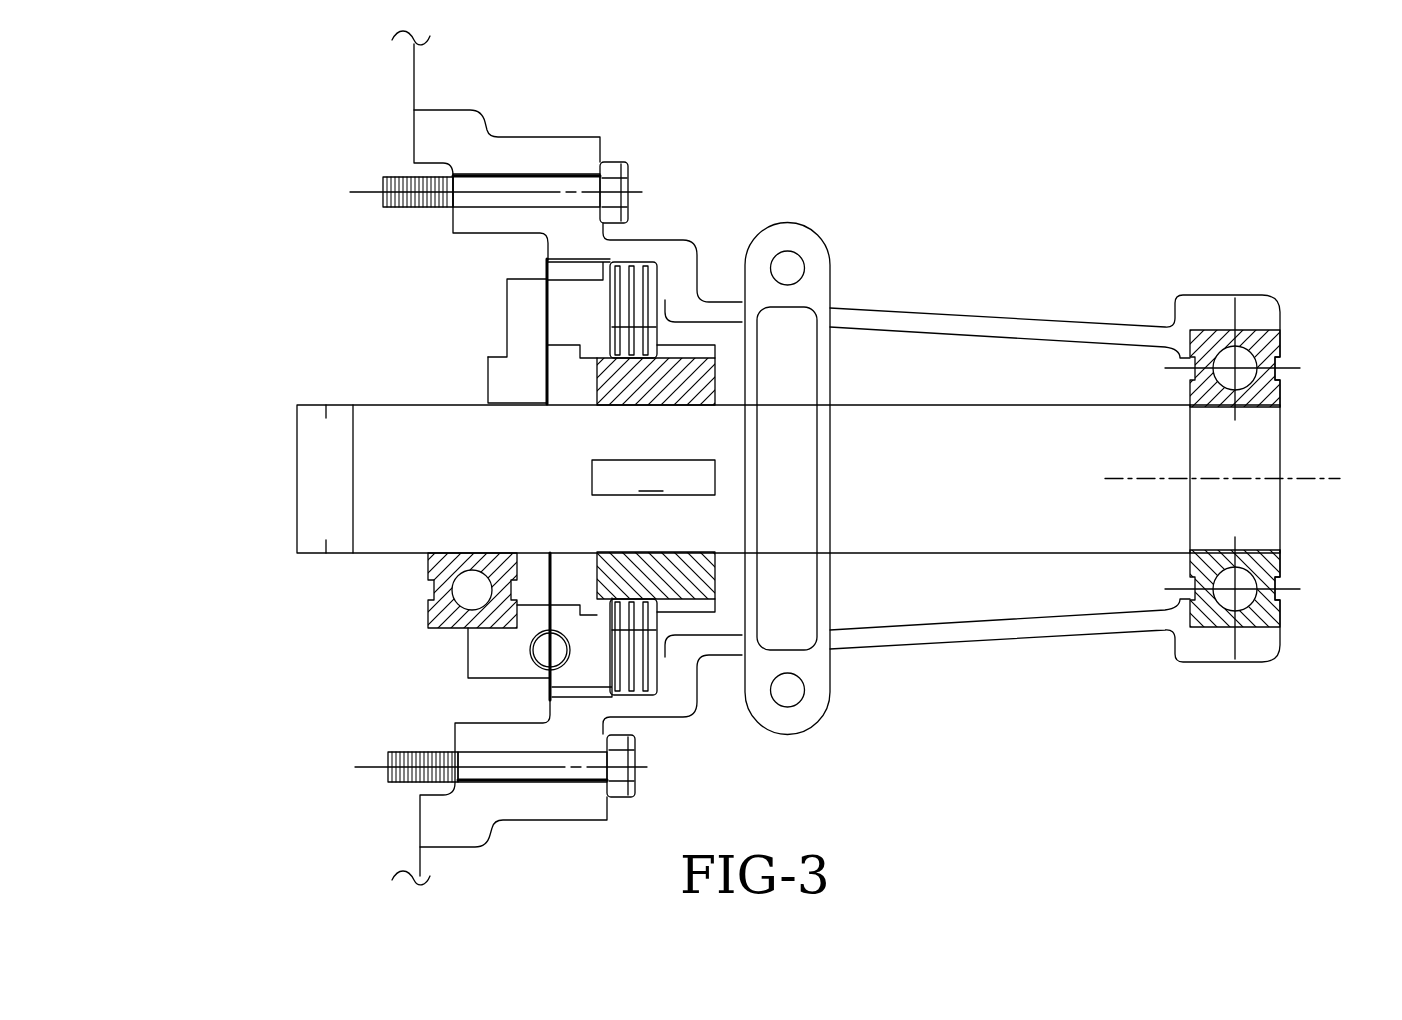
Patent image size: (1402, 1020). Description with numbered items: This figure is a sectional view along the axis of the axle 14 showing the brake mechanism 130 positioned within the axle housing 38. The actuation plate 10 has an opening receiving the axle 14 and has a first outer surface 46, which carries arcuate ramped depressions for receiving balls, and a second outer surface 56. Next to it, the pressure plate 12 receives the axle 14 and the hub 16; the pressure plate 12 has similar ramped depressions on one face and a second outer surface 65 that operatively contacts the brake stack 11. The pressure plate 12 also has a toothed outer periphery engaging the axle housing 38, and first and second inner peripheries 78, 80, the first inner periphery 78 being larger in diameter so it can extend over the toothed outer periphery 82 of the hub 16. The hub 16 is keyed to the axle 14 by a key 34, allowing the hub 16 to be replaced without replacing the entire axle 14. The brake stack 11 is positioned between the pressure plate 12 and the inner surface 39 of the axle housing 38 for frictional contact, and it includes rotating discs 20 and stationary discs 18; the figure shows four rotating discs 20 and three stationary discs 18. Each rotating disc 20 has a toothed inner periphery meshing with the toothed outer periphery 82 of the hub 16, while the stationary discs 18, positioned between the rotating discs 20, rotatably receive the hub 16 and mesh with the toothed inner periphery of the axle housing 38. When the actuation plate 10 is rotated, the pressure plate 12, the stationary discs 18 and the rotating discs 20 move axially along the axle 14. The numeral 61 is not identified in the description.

The brake mechanism 130 is at (213, 223).
The brake stack 11 is at (667, 160).
The axle 14 is at (300, 423).
The key 34 is at (653, 477).
The actuation plate 10 is at (513, 290).
The second outer surface 56 is at (505, 312).
The hub face 61 is at (545, 305).
The first outer surface 46 is at (547, 310).
The toothed outer periphery 82 is at (580, 345).
The second inner periphery 80 is at (560, 353).
The first inner periphery 78 is at (560, 595).
The pressure plate 12 is at (587, 282).
The rotating discs 20 is at (665, 300).
The hub 16 is at (712, 365).
The stationary discs 18 is at (658, 276).
The inner surface 39 is at (660, 300).
The axle housing 38 is at (972, 317).
The second outer surface 65 is at (613, 657).